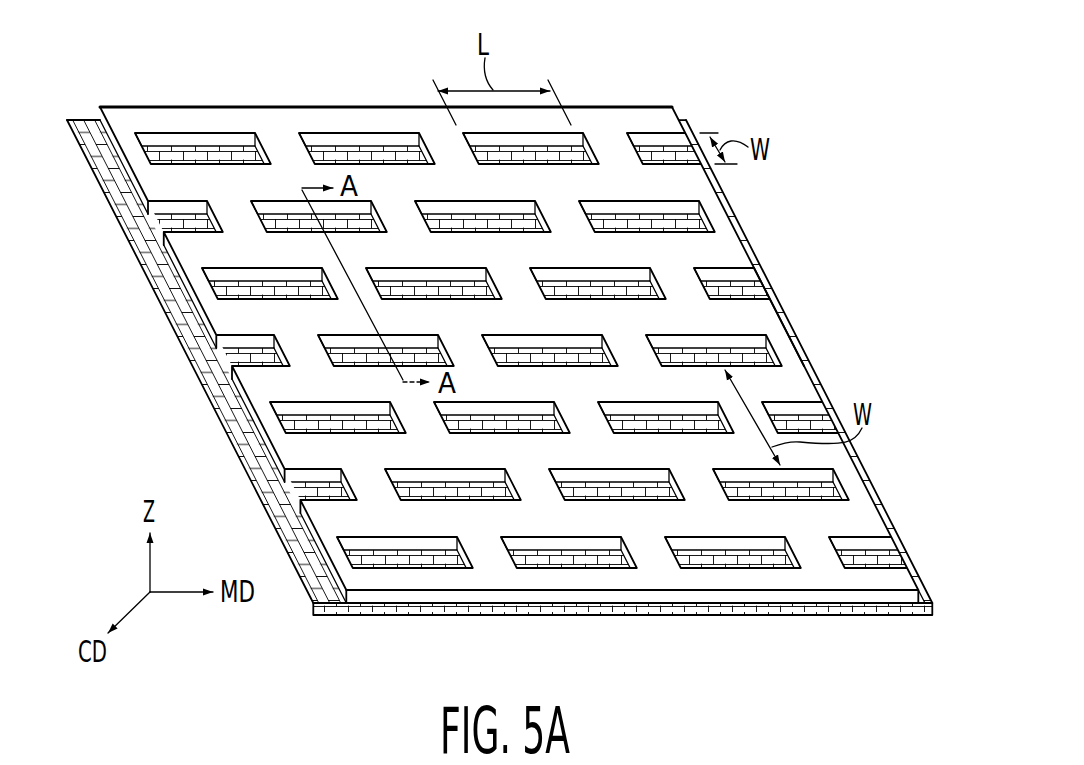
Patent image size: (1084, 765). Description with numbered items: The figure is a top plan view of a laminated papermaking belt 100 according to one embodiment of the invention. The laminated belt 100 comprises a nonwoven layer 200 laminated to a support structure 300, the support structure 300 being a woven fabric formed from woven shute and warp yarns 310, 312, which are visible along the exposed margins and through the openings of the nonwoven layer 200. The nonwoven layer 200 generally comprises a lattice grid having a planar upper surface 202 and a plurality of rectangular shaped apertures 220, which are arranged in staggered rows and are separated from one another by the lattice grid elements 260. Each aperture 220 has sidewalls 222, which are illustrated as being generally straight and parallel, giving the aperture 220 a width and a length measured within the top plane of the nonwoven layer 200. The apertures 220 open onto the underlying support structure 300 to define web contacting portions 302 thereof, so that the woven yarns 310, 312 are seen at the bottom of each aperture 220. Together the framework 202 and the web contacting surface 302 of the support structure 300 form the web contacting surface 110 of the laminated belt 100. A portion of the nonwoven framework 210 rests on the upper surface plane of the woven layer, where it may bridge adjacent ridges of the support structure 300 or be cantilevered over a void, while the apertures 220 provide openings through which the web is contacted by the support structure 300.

The laminated belt 100 is at (516, 334).
The nonwoven layer 200 is at (526, 310).
The nonwoven framework 210 is at (782, 340).
The planar upper surface 202 is at (718, 246).
The apertures 220 is at (201, 155).
The sidewalls 222 is at (763, 369).
The lattice grid elements 260 is at (755, 313).
The web contacting surface of the laminated belt 110 is at (547, 324).
The support structure 300 is at (499, 394).
The shute yarns 310 is at (160, 275).
The warp yarns 312 is at (228, 408).
The web contacting surface 302 is at (221, 357).